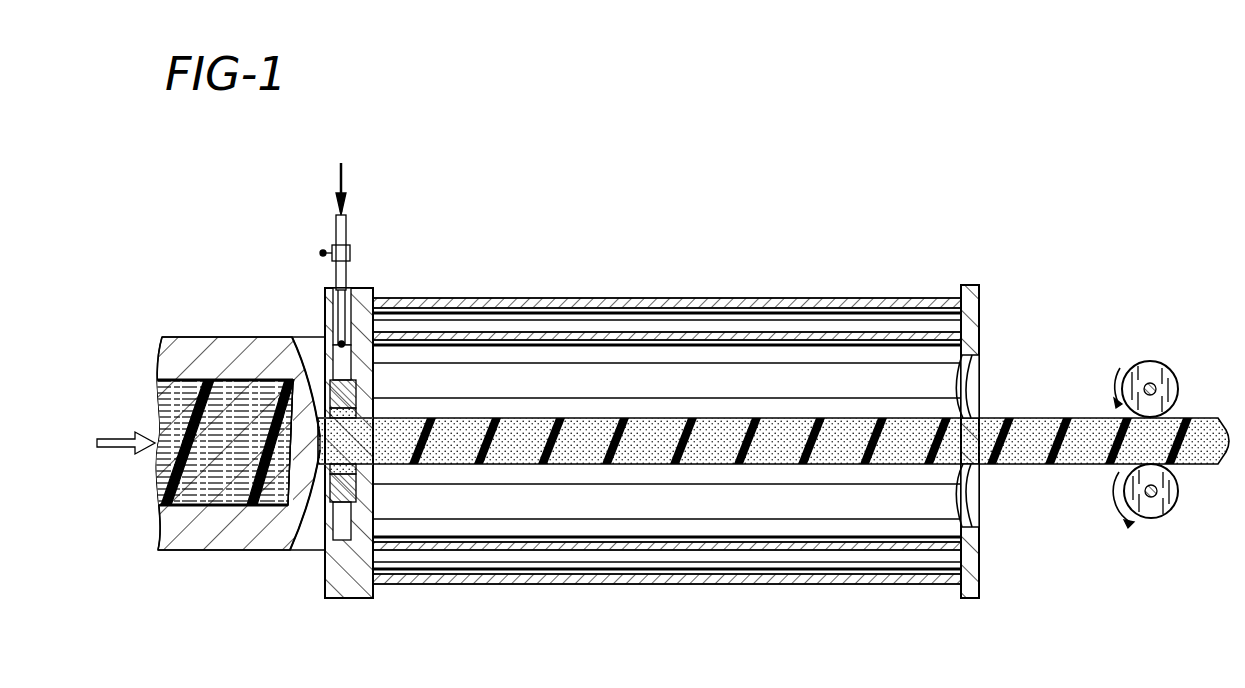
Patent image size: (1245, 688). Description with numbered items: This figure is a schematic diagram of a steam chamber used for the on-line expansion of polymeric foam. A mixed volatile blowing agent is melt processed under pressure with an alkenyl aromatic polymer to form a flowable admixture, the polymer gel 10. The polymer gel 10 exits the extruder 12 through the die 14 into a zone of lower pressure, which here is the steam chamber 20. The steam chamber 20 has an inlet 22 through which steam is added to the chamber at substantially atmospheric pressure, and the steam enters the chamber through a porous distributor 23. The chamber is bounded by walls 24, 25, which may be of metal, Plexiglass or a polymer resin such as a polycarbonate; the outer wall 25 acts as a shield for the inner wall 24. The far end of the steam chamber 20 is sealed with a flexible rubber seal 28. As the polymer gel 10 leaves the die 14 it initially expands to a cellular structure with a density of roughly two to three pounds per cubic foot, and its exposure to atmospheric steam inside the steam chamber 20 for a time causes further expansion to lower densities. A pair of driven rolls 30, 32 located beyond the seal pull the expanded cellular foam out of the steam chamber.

The polymer gel 10 is at (160, 430).
The extruder 12 is at (193, 550).
The die 14 is at (316, 434).
The steam chamber 20 is at (572, 272).
The inlet 22 is at (354, 279).
The porous distributor 23 is at (313, 545).
The inner wall 24 is at (822, 332).
The outer wall 25 is at (714, 298).
The flexible rubber seal 28 is at (982, 510).
The driven roll 30 is at (1142, 360).
The driven roll 32 is at (1160, 515).